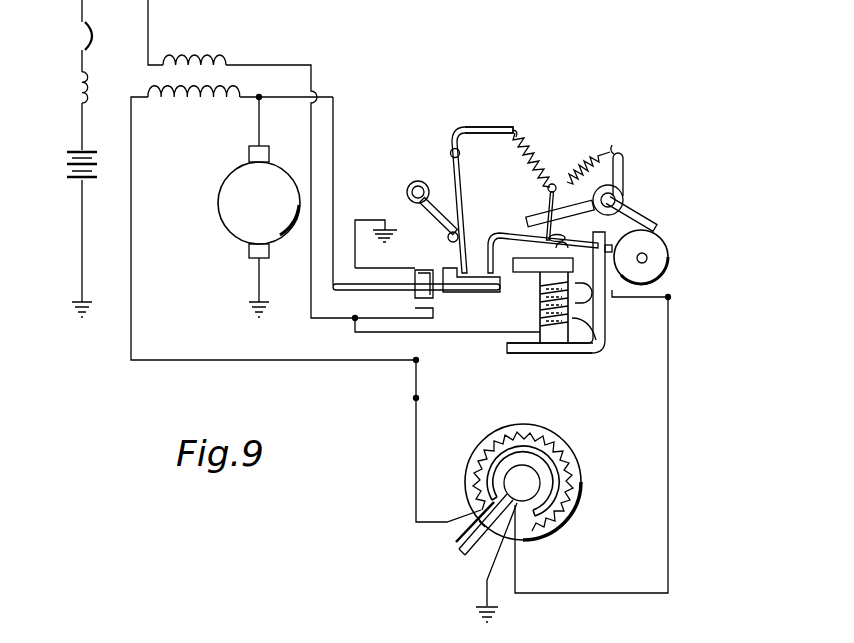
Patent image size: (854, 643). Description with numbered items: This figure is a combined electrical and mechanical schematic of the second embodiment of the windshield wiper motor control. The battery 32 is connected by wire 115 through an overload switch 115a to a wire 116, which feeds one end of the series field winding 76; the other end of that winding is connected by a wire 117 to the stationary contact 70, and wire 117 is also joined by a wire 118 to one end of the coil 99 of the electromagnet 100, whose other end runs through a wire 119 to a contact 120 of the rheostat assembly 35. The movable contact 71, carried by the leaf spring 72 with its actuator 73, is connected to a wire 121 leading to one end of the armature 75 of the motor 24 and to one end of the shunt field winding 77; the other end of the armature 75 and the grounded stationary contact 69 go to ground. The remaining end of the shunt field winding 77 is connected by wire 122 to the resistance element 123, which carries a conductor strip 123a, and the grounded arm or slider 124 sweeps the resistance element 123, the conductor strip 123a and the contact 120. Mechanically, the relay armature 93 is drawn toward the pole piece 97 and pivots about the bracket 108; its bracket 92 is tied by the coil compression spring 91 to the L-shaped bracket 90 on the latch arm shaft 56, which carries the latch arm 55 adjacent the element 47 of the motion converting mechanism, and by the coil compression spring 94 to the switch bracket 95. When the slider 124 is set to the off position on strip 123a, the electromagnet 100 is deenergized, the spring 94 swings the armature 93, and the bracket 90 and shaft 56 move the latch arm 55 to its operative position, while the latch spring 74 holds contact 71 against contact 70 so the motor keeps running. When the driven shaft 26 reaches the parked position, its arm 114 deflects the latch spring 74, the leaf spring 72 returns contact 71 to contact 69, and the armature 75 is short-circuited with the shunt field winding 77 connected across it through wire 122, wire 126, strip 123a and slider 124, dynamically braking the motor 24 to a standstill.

The overload switch 115a is at (85, 38).
The wire 115 is at (84, 120).
The battery 32 is at (67, 164).
The wire 116 is at (149, 28).
The series field winding 76 is at (220, 57).
The wire 117 is at (311, 65).
The shunt field winding 77 is at (222, 99).
The wire 121 is at (334, 171).
The wire 122 is at (131, 233).
The armature 75 is at (222, 186).
The motor 24 is at (232, 228).
The shaft 26 is at (417, 181).
The arm 114 is at (420, 207).
The latch spring 74 is at (467, 190).
The switch bracket 95 is at (494, 128).
The coil compression spring 94 is at (530, 162).
The coil compression spring 91 is at (594, 161).
The L-shaped bracket 90 is at (620, 163).
The latch arm shaft 56 is at (613, 196).
The latch arm 55 is at (641, 219).
The bracket 92 is at (549, 205).
The wheel 47 is at (666, 236).
The relay armature 93 is at (503, 235).
The leaf spring 72 is at (398, 291).
The stationary contact 69 is at (422, 270).
The movable contact 71 is at (432, 296).
The stationary contact 70 is at (434, 316).
The actuator 73 is at (479, 292).
The wire 118 is at (493, 333).
The pole piece 97 is at (551, 258).
The bracket 108 is at (603, 318).
The coil 99 is at (600, 343).
The electromagnet 100 is at (556, 336).
The wire 119 is at (669, 333).
The wire 126 is at (423, 360).
The rheostat assembly 35 is at (615, 488).
The resistance element 123 is at (540, 437).
The contact 120 is at (557, 475).
The arm or slider 124 is at (462, 552).
The conductor strip 123a is at (470, 528).